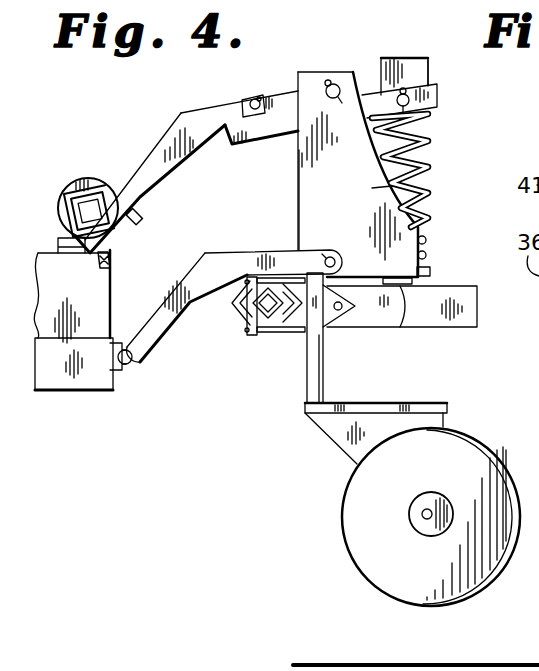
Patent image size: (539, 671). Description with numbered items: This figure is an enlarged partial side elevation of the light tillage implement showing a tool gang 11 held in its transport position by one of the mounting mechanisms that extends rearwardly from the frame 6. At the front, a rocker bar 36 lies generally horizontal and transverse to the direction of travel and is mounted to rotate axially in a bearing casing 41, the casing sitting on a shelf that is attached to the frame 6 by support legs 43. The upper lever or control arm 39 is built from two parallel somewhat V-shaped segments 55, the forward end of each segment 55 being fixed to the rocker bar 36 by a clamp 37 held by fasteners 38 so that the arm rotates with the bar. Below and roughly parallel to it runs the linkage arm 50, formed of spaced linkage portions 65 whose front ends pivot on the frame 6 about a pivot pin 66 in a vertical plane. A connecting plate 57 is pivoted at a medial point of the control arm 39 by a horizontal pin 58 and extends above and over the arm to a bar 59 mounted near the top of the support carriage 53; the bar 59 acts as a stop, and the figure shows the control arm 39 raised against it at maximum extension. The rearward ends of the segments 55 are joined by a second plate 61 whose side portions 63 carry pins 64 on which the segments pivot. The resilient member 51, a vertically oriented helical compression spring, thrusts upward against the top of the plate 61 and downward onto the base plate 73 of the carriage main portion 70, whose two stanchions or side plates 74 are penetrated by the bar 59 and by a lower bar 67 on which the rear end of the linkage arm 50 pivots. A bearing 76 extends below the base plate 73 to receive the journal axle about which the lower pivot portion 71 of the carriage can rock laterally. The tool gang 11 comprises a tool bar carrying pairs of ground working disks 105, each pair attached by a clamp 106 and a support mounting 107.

The frame 6 is at (50, 378).
The tool gang 11 is at (305, 338).
The rocker bar 36 is at (100, 165).
The clamp 37 is at (68, 220).
The fasteners 38 is at (122, 222).
The control arm 39 is at (157, 150).
The bearing casing 41 is at (80, 180).
The support legs 43 is at (93, 292).
The linkage arm 50 is at (218, 230).
The resilient member 51 is at (428, 150).
The support carriage 53 is at (424, 194).
The V-shaped segment 55 is at (205, 113).
The connecting plate 57 is at (290, 90).
The horizontal pin 58 is at (254, 100).
The bar 59 is at (327, 80).
The second plate 61 is at (405, 58).
The side portion 63 is at (418, 64).
The pin 64 is at (437, 92).
The linkage portion 65 is at (145, 340).
The pivot pin 66 is at (125, 373).
The bar 67 is at (341, 255).
The main portion 70 is at (307, 150).
The lower pivot portion 71 is at (430, 317).
The base plate 73 is at (436, 273).
The side plates 74 is at (308, 193).
The bearing 76 is at (405, 326).
The ground working disks 105 is at (403, 592).
The clamp 106 is at (262, 338).
The support mounting 107 is at (343, 442).